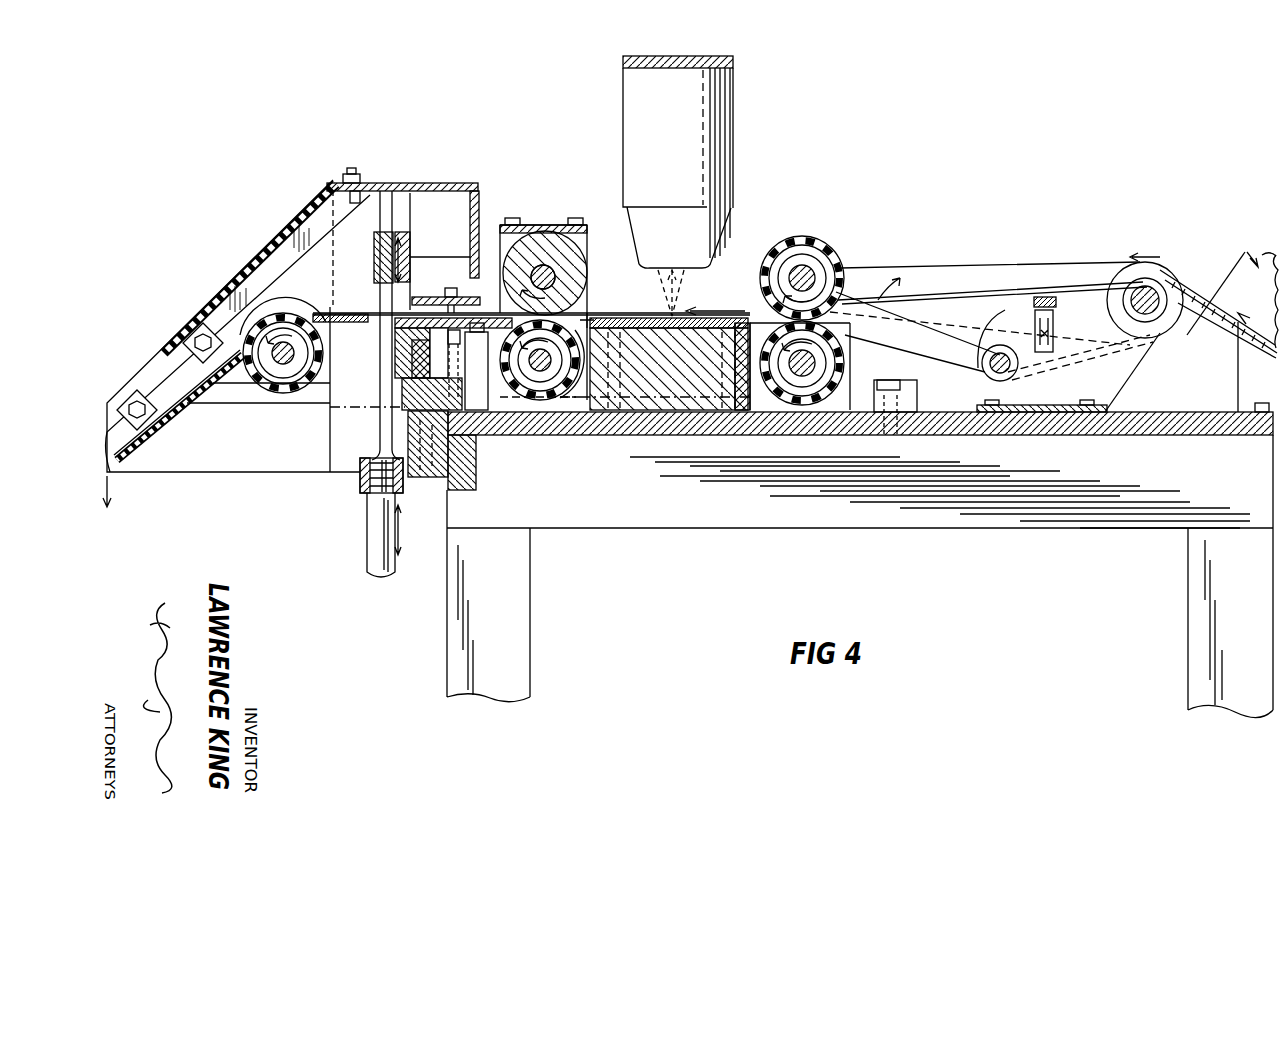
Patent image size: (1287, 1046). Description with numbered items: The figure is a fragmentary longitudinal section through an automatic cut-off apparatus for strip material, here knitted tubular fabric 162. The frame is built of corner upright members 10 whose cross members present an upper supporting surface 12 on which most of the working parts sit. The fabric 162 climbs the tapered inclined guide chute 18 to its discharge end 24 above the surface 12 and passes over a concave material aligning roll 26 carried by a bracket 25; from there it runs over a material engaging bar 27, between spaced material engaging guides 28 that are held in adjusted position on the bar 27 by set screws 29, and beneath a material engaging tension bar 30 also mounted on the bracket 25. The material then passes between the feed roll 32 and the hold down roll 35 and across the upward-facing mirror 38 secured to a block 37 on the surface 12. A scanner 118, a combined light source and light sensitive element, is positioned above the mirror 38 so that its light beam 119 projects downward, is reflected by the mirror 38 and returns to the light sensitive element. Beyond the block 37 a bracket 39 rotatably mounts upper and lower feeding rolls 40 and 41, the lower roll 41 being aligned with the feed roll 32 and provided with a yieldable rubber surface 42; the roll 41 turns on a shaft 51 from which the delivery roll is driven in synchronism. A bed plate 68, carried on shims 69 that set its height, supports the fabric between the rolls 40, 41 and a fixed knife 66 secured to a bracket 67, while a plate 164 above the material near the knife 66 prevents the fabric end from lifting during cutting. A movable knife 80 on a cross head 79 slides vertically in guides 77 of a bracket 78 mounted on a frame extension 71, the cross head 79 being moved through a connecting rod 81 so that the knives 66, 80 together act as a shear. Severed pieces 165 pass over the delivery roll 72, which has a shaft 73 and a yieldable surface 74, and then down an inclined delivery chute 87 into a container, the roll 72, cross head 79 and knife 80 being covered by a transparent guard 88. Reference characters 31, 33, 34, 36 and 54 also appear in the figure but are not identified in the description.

The corner upright members 10 is at (525, 590).
The upper supporting surface 12 is at (1218, 418).
The tapered inclined guide chute 18 is at (1222, 284).
The discharge end 24 is at (1222, 312).
The bracket 25 is at (1112, 390).
The concave material aligning roll 26 is at (1163, 286).
The material engaging bar 27 is at (1048, 358).
The material engaging guides 28 is at (1034, 328).
The set screws 29 is at (1045, 297).
The material engaging tension bar 30 is at (1006, 378).
The support block 31 is at (912, 408).
The feed roll 32 is at (822, 360).
The roller surface 33 is at (822, 375).
The belt 34 is at (892, 302).
The hold down roll 35 is at (812, 262).
The upper feed roller 36 is at (797, 243).
The block 37 is at (690, 397).
The mirror 38 is at (647, 320).
The bracket 39 is at (500, 412).
The upper feeding roll 40 is at (545, 250).
The lower feeding roll 41 is at (554, 400).
The yieldable surface 42 is at (536, 400).
The shaft 51 is at (588, 320).
The roller shaft 54 is at (556, 278).
The fixed knife 66 is at (394, 360).
The bracket 67 is at (402, 396).
The bed plate 68 is at (462, 338).
The shims 69 is at (458, 366).
The frame extension 71 is at (248, 455).
The delivery roller 72 is at (276, 393).
The shaft 73 is at (266, 372).
The yieldable surface 74 is at (302, 392).
The vertical guides 77 is at (378, 183).
The bracket 78 is at (402, 212).
The cross head 79 is at (373, 268).
The movable knife 80 is at (394, 236).
The connecting rod 81 is at (367, 523).
The inclined delivery chute 87 is at (174, 410).
The transparent guard 88 is at (292, 214).
The scanner 118 is at (724, 241).
The light beam 119 is at (684, 292).
The knitted tubular fabric 162 is at (1200, 306).
The plate 164 is at (432, 297).
The cut piece 165 is at (324, 316).